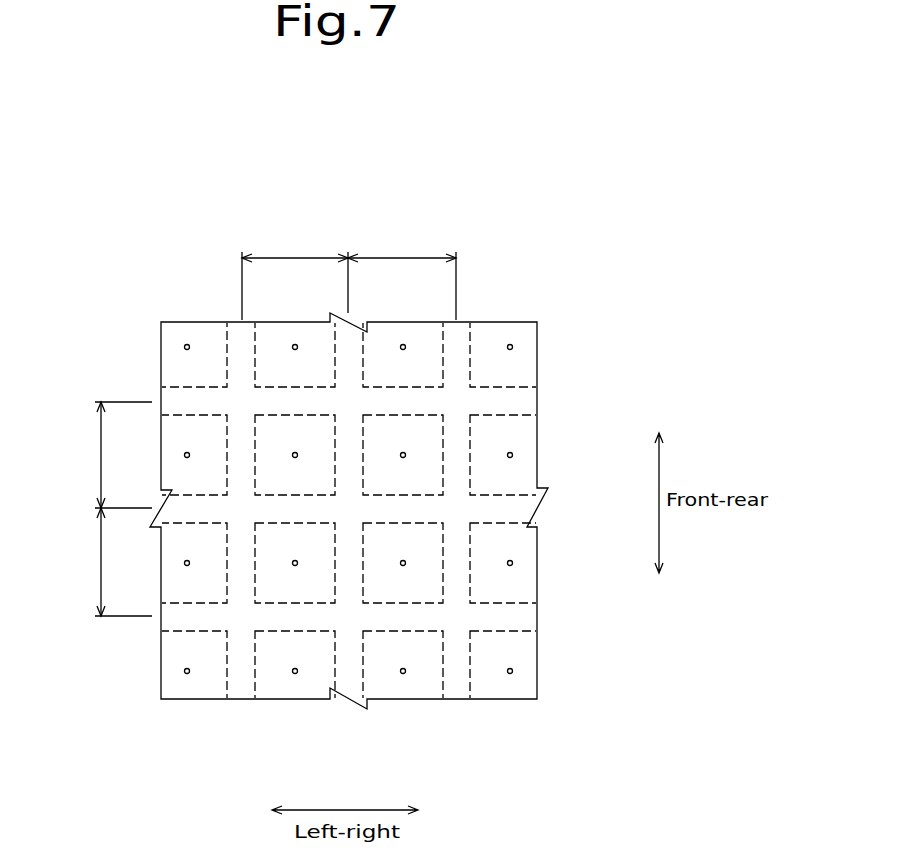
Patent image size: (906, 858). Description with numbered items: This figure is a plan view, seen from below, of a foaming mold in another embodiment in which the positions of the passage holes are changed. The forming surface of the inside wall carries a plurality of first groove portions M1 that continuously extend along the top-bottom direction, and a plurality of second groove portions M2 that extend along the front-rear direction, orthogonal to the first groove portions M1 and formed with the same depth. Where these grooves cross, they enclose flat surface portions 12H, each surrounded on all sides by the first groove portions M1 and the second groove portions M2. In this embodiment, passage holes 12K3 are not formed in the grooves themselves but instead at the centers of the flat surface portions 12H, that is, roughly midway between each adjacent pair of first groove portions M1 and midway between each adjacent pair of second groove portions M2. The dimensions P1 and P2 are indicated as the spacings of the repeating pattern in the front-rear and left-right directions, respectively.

The flat surface portion 12H is at (265, 350).
The passage hole 12K3 is at (295, 452).
The first groove portion M1 is at (497, 386).
The second groove portion M2 is at (256, 662).
The first pitch P1 is at (115, 509).
The second pitch P2 is at (349, 276).